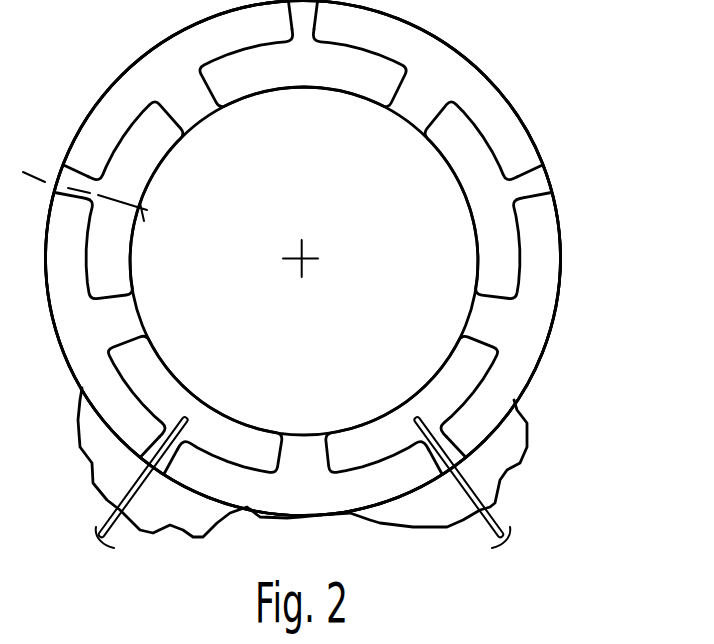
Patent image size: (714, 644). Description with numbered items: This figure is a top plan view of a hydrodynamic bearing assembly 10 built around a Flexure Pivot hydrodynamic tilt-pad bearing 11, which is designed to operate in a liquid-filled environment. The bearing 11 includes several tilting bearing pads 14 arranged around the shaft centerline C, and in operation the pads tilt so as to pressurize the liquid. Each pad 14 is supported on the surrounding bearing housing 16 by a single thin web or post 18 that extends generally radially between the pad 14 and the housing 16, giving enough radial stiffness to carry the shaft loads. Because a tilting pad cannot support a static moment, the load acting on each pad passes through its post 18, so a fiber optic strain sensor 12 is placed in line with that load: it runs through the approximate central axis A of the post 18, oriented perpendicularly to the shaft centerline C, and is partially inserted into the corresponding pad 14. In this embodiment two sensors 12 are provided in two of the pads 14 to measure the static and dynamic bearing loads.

The hydrodynamic bearing assembly 10 is at (532, 101).
The Flexure Pivot hydrodynamic tilt-pad bearing 11 is at (560, 326).
The fiber optic strain sensor 12 is at (489, 490).
The tilting bearing pads 14 is at (473, 213).
The bearing housing 16 is at (557, 252).
The post 18 is at (535, 182).
The central axis of the post A is at (93, 203).
The shaft centerline C is at (304, 256).